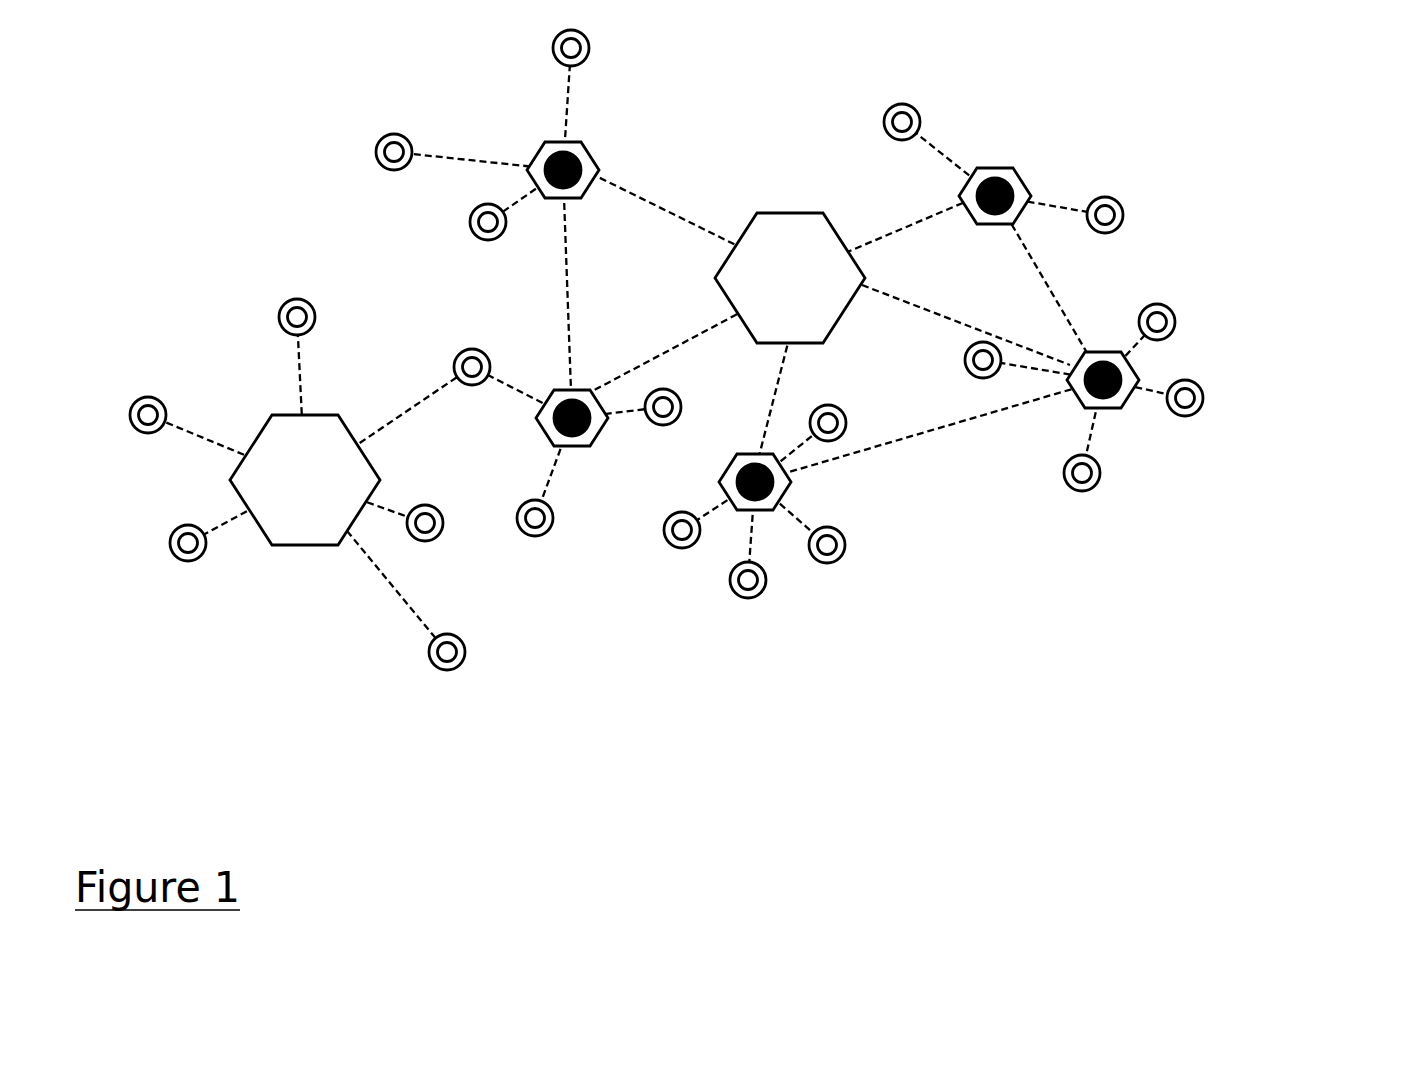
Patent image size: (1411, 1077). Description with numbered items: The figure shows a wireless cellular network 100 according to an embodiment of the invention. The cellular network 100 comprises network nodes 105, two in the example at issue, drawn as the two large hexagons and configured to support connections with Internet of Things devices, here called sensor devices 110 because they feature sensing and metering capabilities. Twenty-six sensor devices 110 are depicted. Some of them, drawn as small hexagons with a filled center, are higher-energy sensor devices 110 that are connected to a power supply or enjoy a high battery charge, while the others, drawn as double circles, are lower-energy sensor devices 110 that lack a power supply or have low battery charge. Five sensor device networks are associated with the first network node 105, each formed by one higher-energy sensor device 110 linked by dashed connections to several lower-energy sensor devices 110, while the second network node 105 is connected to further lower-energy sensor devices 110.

The cellular network 100 is at (720, 396).
The network node 105 is at (529, 457).
The sensor device 110 is at (684, 396).